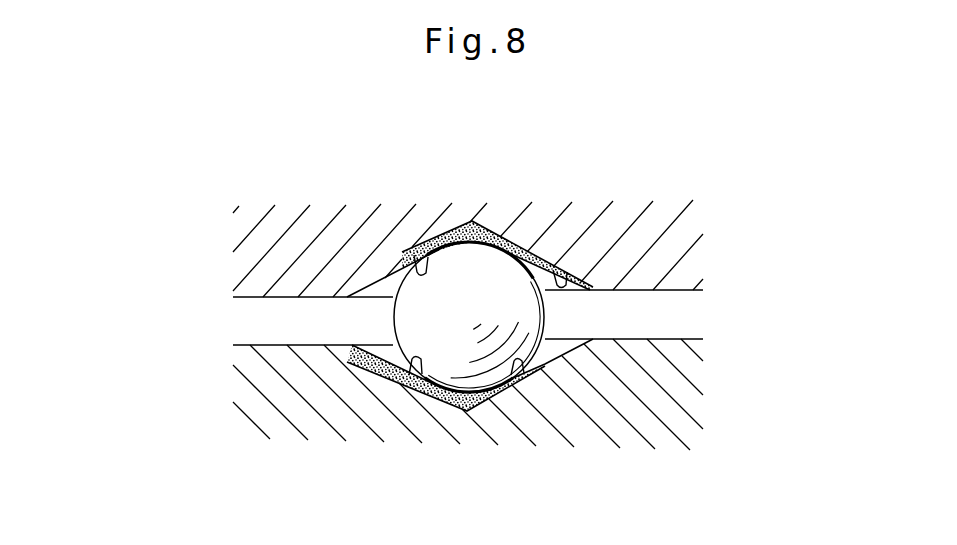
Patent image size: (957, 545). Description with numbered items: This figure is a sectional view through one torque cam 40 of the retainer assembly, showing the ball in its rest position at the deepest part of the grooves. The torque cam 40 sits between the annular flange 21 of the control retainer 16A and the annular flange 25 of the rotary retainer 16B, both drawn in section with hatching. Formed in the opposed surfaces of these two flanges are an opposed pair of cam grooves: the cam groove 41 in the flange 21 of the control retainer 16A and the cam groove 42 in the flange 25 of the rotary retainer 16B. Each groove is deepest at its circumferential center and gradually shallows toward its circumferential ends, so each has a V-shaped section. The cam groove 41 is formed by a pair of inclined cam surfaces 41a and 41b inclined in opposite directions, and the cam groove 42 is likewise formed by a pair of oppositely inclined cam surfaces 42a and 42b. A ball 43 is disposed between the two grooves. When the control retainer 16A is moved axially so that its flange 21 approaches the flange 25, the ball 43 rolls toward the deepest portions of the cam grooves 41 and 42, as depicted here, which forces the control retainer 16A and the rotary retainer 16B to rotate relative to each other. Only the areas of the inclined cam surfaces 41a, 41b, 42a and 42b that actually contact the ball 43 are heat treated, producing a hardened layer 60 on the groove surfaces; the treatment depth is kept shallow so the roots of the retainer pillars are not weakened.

The annular flange 21 is at (289, 223).
The annular flange 25 is at (302, 413).
The control retainer 16A is at (374, 238).
The rotary retainer 16B is at (444, 420).
The torque cam 40 is at (465, 229).
The cam groove 41 is at (567, 270).
The inclined cam surface 41a is at (544, 262).
The inclined cam surface 41b is at (424, 240).
The cam groove 42 is at (588, 342).
The inclined cam surface 42a is at (523, 380).
The inclined cam surface 42b is at (417, 363).
The ball 43 is at (483, 270).
The hardened layer 60 is at (481, 223).